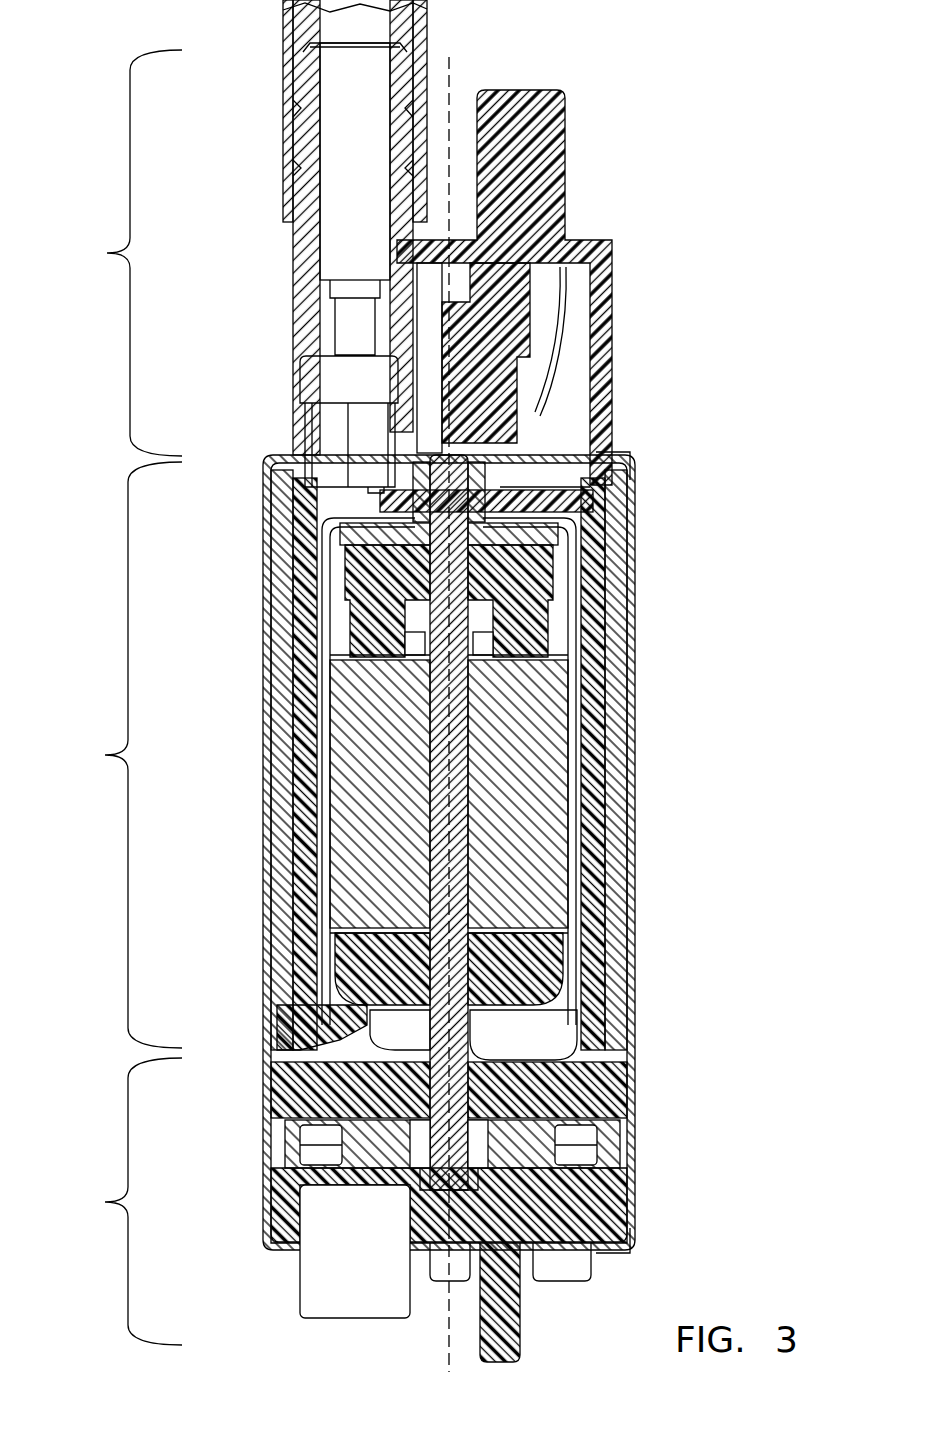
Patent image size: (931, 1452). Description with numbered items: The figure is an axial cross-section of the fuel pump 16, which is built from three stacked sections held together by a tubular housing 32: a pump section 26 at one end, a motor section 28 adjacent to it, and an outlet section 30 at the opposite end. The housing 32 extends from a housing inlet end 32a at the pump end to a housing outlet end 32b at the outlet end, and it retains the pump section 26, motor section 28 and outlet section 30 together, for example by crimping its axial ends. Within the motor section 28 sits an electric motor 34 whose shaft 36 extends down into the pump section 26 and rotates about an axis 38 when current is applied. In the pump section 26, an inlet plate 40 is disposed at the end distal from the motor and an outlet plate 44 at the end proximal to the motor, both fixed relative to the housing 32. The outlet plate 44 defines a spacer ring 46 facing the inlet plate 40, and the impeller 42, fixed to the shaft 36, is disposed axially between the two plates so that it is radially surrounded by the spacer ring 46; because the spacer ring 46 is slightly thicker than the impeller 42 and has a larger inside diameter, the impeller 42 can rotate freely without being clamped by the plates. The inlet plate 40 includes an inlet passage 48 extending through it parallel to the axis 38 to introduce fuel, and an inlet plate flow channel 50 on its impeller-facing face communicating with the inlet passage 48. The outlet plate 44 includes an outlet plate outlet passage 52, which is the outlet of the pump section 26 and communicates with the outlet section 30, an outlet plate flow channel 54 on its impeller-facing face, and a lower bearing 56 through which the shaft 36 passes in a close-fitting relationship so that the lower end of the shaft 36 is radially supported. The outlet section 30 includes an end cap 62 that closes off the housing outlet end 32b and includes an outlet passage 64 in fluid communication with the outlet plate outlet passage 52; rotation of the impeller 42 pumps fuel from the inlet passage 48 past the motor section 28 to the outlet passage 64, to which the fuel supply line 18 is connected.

The fuel pump 16 is at (684, 70).
The fuel supply line 18 is at (285, 88).
The pump section 26 is at (127, 1201).
The motor section 28 is at (127, 755).
The outlet section 30 is at (127, 253).
The housing 32 is at (632, 583).
The housing inlet end 32a is at (630, 1250).
The housing outlet end 32b is at (612, 457).
The electric motor 34 is at (628, 793).
The shaft 36 is at (460, 805).
The axis 38 is at (453, 62).
The inlet plate 40 is at (630, 1217).
The impeller 42 is at (600, 1158).
The outlet plate 44 is at (626, 1066).
The spacer ring 46 is at (273, 1160).
The inlet passage 48 is at (330, 1300).
The inlet plate flow channel 50 is at (580, 1180).
The outlet plate outlet passage 52 is at (600, 1100).
The outlet plate flow channel 54 is at (615, 1135).
The lower bearing 56 is at (405, 1110).
The end cap 62 is at (607, 318).
The outlet passage 64 is at (337, 52).